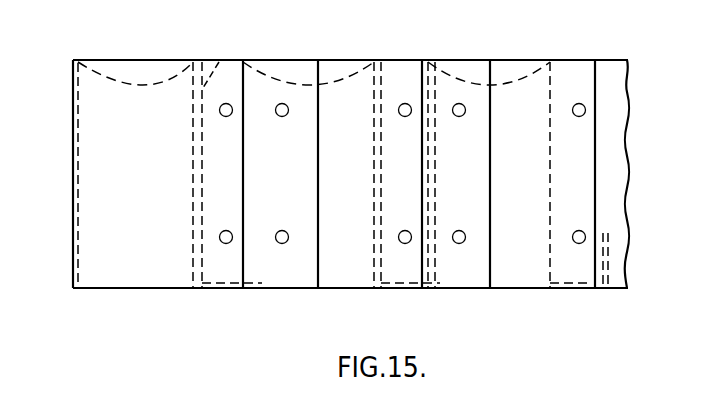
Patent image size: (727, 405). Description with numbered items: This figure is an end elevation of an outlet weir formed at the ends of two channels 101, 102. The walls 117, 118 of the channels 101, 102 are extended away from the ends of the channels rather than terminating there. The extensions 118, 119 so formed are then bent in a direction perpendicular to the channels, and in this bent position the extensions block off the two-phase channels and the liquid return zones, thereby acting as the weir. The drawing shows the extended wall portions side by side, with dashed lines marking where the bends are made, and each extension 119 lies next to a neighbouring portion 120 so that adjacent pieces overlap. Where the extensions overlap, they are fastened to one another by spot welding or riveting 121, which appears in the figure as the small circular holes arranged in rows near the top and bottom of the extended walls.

The arcuate cut line 101 is at (153, 88).
The arcuate cut line 102 is at (340, 92).
The side edge 117 is at (73, 133).
The fold line 118 is at (219, 57).
The panel 119 is at (158, 270).
The flap 120 is at (275, 275).
The holes 121 is at (231, 115).